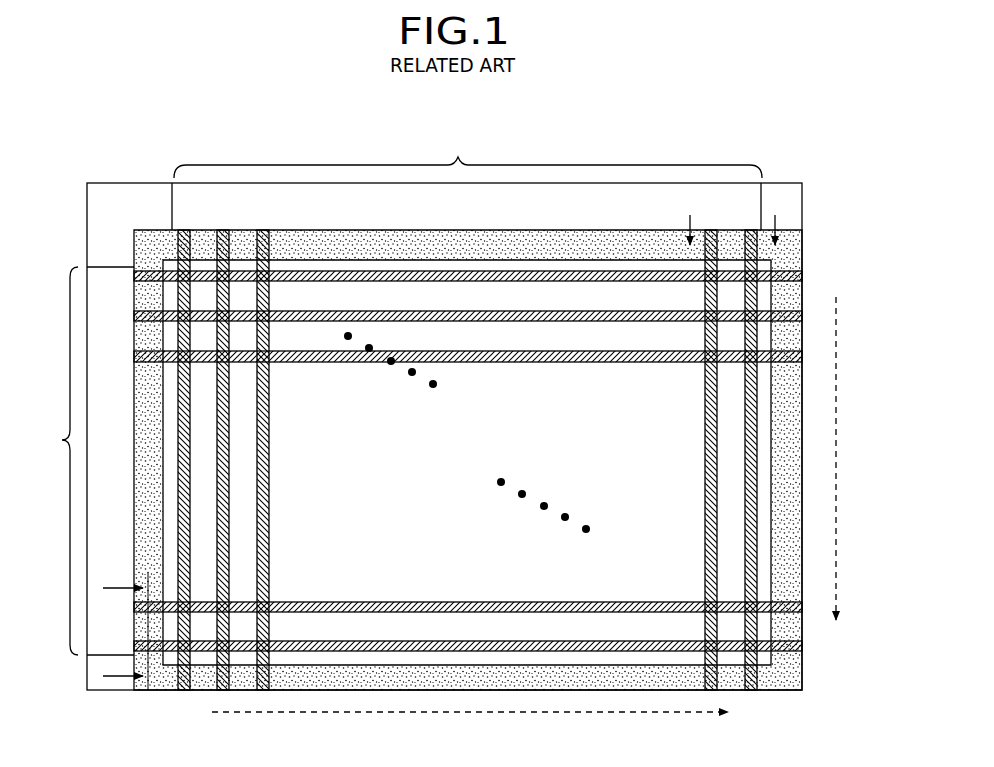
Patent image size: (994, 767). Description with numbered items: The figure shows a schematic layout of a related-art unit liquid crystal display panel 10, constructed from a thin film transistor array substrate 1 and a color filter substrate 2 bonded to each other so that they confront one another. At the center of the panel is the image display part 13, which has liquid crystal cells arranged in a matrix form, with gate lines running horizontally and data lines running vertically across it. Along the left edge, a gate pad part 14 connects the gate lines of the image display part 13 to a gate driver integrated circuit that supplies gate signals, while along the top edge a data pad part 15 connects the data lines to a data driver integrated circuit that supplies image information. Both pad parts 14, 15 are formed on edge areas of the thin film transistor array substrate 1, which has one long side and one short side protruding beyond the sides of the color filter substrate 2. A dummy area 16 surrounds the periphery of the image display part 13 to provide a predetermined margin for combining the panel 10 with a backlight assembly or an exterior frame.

The thin film transistor array substrate 1 is at (120, 183).
The color filter substrate 2 is at (142, 233).
The unit liquid crystal display panel 10 is at (469, 428).
The image display part 13 is at (452, 444).
The gate pad part 14 is at (85, 461).
The data pad part 15 is at (468, 156).
The dummy area 16 is at (419, 448).